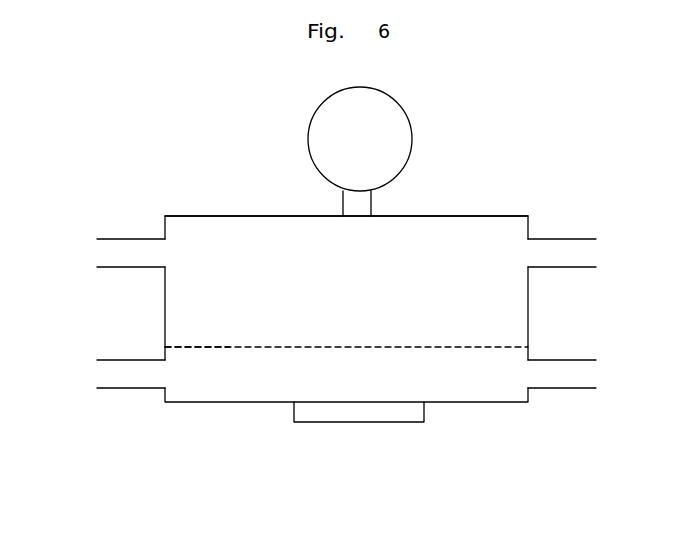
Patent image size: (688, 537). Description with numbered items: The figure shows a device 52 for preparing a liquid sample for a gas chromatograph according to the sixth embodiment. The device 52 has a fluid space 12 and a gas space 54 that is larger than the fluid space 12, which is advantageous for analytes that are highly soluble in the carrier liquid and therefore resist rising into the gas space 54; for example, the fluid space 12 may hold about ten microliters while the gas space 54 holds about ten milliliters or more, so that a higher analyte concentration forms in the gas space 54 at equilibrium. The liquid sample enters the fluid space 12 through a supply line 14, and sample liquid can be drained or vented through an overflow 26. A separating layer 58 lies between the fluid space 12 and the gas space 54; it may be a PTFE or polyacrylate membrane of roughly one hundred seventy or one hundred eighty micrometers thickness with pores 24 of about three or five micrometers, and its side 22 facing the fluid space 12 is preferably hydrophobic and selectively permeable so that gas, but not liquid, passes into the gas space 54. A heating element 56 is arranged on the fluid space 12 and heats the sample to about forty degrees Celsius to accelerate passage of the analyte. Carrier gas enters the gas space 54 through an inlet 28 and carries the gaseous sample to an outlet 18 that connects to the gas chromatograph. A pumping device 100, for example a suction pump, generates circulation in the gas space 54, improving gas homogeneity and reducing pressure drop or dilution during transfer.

The device 52 is at (120, 123).
The fluid space 12 is at (478, 404).
The gas space 54 is at (430, 216).
The inlet 28 is at (126, 238).
The outlet 18 is at (555, 239).
The supply line 14 is at (130, 388).
The overflow 26 is at (556, 388).
The separating layer 58 is at (250, 347).
The pores 24 is at (200, 348).
The side 22 is at (293, 366).
The heating element 56 is at (348, 425).
The pumping device 100 is at (412, 127).